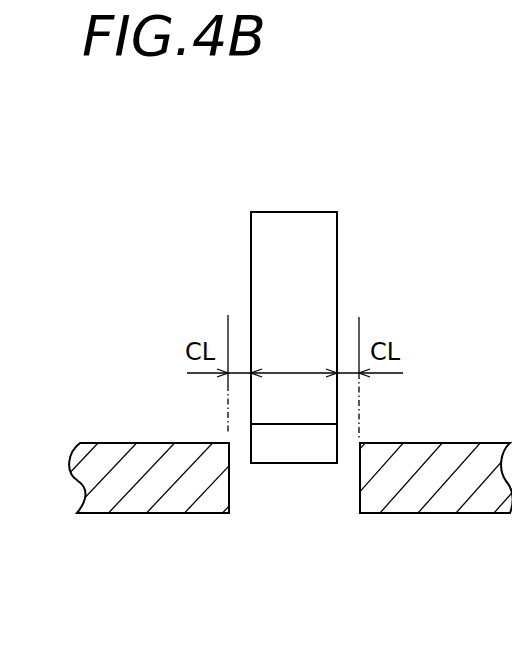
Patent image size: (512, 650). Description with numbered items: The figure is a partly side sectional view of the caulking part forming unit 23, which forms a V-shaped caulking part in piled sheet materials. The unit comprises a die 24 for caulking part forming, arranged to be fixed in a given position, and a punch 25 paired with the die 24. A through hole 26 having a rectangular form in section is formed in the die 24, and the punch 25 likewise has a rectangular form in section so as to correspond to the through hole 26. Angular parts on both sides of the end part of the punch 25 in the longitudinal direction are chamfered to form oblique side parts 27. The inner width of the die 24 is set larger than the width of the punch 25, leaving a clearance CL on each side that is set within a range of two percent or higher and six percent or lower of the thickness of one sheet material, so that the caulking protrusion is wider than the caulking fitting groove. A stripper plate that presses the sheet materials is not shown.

The caulking part forming unit 23 is at (373, 172).
The die 24 is at (453, 430).
The punch 25 is at (345, 245).
The through hole 26 is at (288, 512).
The oblique side parts 27 is at (310, 452).